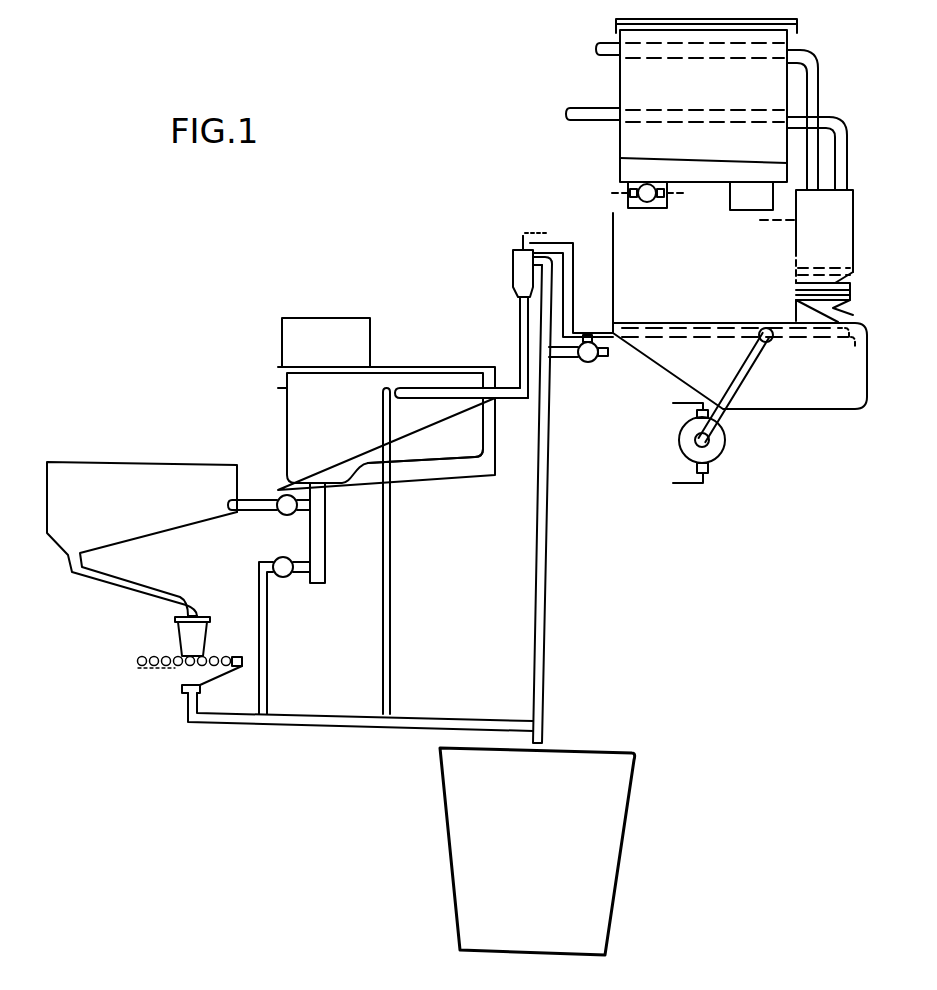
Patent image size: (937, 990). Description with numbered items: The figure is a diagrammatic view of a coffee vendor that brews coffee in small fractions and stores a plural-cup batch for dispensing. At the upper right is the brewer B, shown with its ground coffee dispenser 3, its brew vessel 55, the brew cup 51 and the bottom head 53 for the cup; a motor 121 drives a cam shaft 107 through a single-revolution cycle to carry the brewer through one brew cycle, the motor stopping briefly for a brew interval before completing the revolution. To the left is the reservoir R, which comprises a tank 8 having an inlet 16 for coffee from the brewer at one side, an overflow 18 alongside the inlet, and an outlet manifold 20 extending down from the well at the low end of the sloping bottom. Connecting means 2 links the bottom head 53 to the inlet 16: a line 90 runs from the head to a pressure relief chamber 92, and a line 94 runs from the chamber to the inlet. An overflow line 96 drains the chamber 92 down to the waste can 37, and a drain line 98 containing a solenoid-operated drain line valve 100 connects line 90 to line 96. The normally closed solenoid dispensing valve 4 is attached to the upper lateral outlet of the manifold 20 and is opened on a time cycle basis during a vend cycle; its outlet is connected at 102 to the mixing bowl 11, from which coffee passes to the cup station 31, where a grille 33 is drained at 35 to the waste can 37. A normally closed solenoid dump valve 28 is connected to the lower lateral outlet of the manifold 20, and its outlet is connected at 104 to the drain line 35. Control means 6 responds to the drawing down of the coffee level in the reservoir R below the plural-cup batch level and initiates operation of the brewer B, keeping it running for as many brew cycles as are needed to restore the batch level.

The means connecting brewer to reservoir 2 is at (523, 232).
The ground coffee dispenser 3 is at (620, 84).
The dispensing valve 4 is at (280, 516).
The control means 6 is at (298, 317).
The tank 8 is at (493, 440).
The mixing bowl 11 is at (47, 480).
The inlet 16 is at (400, 393).
The overflow 18 is at (383, 395).
The outlet manifold 20 is at (325, 540).
The dump valve 28 is at (287, 578).
The cup station 31 is at (172, 650).
The grille 33 is at (220, 658).
The drain line 35 is at (338, 725).
The waste can 37 is at (546, 852).
The brew cup 51 is at (850, 281).
The bottom head 53 is at (848, 292).
The brew vessel 55 is at (853, 231).
The line 90 is at (573, 240).
The pressure relief chamber 92 is at (513, 268).
The line 94 is at (520, 318).
The overflow line 96 is at (551, 283).
The drain line 98 is at (560, 353).
The drain line valve 100 is at (596, 361).
The connection from dispensing valve to mixing bowl 102 is at (243, 511).
The connection from dump valve to drain line 104 is at (268, 665).
The cam shaft 107 is at (733, 392).
The motor 121 is at (718, 458).
The brewer B is at (786, 412).
The reservoir R is at (285, 415).